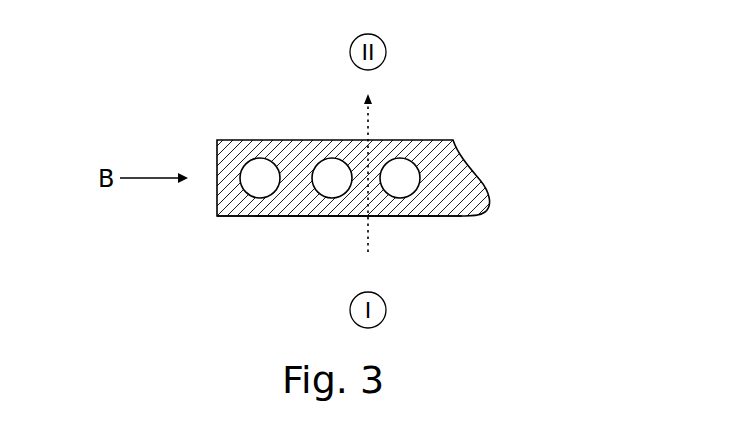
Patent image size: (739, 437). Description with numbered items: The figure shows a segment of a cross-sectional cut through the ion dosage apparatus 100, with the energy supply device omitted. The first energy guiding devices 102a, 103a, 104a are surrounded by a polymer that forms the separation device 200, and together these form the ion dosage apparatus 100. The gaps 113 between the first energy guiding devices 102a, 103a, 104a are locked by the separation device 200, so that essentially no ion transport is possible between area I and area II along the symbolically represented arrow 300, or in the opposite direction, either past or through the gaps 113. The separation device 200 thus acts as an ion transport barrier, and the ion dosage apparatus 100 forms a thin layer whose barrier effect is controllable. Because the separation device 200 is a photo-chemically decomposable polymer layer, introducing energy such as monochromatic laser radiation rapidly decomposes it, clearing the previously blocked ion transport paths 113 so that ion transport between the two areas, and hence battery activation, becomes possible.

The ion dosage apparatus 100 is at (207, 126).
The first energy guiding device 102a is at (257, 158).
The first energy guiding device 103a is at (335, 198).
The first energy guiding device 104a is at (410, 160).
The gaps 113 is at (292, 218).
The separation device 200 is at (234, 209).
The arrow 300 is at (371, 127).